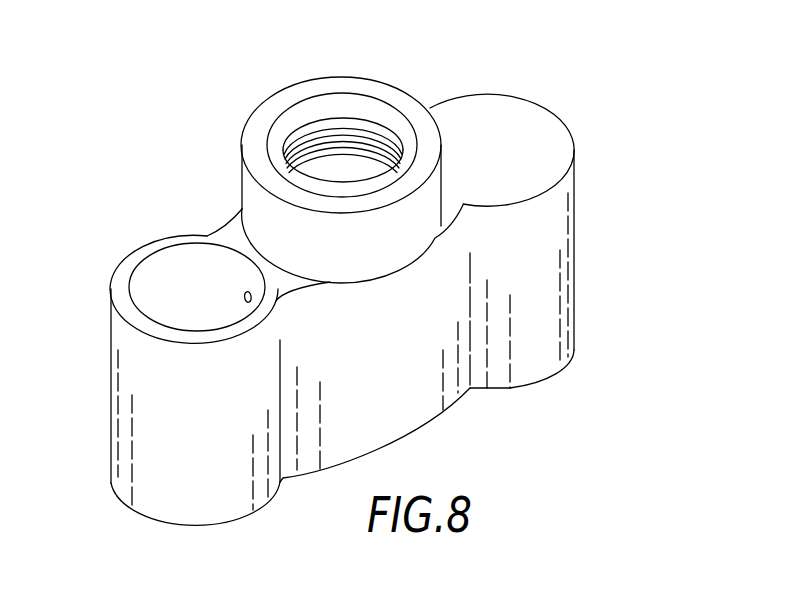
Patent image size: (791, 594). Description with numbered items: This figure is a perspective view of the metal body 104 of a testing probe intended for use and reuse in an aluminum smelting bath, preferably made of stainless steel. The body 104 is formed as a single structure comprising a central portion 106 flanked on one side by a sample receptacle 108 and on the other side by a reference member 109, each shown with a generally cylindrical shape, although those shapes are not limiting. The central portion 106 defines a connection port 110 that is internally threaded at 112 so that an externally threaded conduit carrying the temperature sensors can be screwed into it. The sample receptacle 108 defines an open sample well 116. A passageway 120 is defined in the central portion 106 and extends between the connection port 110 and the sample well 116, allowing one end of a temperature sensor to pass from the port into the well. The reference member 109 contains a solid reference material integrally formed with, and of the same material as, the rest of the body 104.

The metal body 104 is at (549, 97).
The central portion 106 is at (420, 423).
The sample receptacle 108 is at (112, 345).
The reference member 109 is at (575, 233).
The connection port 110 is at (347, 158).
The internal threads 112 is at (311, 133).
The sample well 116 is at (153, 276).
The passageway 120 is at (245, 299).